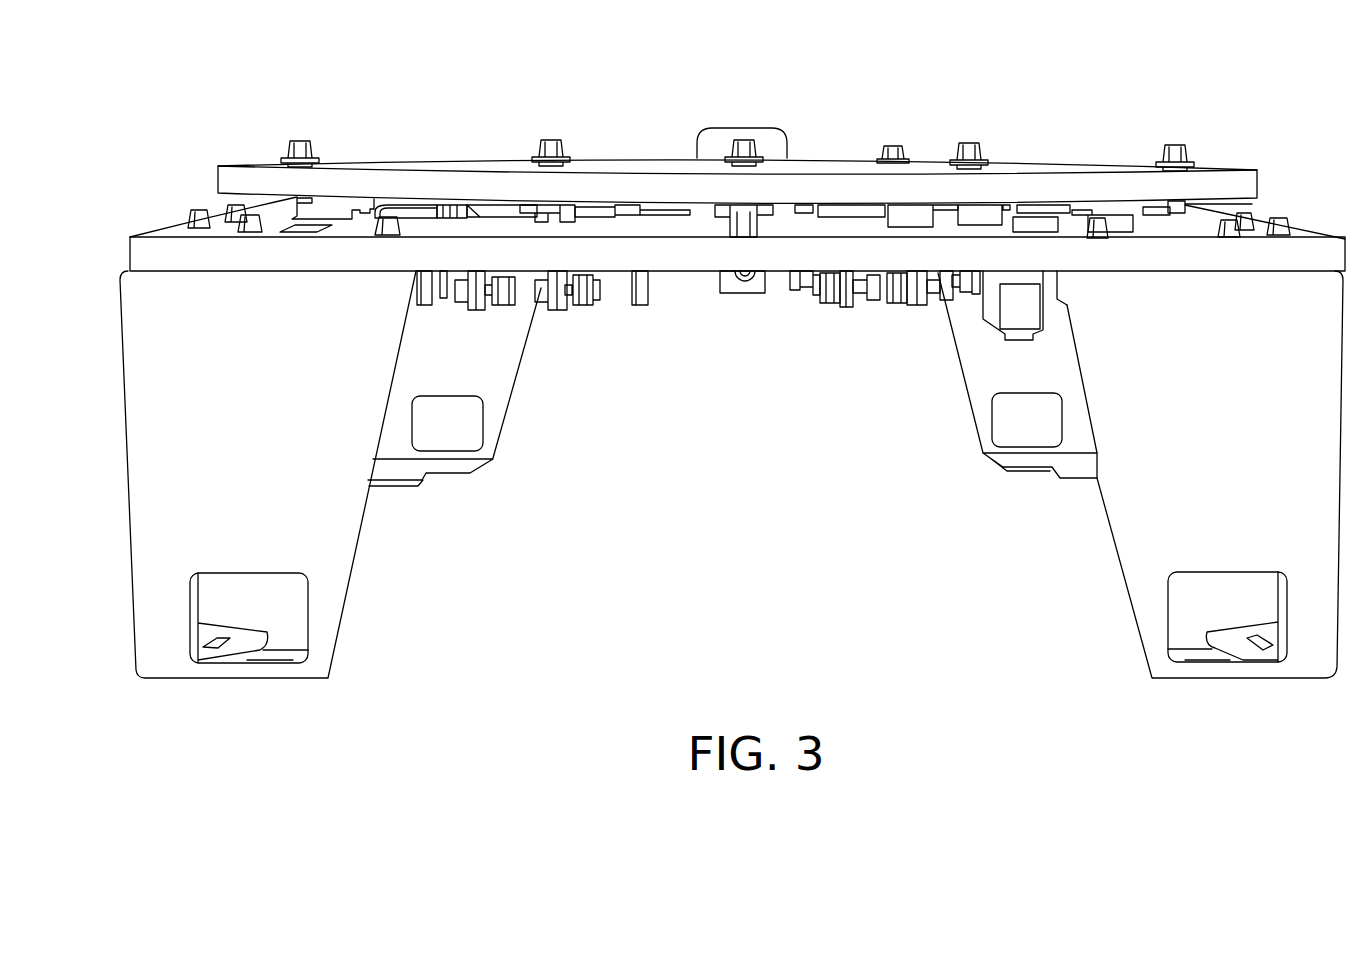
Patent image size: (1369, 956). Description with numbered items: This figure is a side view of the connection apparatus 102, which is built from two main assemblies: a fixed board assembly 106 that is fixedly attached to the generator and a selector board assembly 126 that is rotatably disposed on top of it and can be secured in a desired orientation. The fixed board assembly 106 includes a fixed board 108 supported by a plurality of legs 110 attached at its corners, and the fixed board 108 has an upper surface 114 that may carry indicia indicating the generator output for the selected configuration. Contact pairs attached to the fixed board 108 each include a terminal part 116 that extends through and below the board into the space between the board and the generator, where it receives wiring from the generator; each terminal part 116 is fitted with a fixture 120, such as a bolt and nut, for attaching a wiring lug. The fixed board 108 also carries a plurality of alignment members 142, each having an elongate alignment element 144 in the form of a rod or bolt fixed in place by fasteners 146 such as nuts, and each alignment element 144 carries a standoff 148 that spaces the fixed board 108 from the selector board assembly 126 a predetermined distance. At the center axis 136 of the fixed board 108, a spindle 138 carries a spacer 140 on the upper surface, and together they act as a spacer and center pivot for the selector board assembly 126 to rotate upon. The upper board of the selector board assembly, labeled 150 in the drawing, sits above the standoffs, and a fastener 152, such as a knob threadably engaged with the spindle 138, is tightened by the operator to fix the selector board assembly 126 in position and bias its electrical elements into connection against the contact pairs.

The connection apparatus 102 is at (237, 137).
The fixed board assembly 106 is at (655, 352).
The fixed board 108 is at (760, 252).
The legs 110 is at (305, 517).
The upper surface 114 is at (152, 230).
The terminal part 116 is at (477, 297).
The fixture 120 is at (578, 297).
The selector board assembly 126 is at (1083, 162).
The center axis 136 is at (745, 292).
The spindle 138 is at (737, 273).
The spacer 140 is at (705, 206).
The alignment members 142 is at (556, 138).
The alignment element 144 is at (1252, 204).
The fasteners 146 is at (300, 140).
The standoff 148 is at (748, 228).
The upper plate 150 is at (460, 165).
The fastener 152 is at (762, 137).